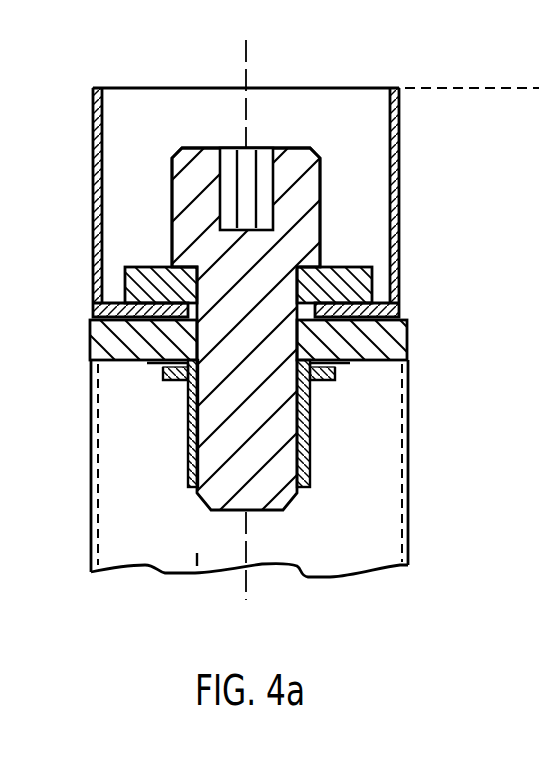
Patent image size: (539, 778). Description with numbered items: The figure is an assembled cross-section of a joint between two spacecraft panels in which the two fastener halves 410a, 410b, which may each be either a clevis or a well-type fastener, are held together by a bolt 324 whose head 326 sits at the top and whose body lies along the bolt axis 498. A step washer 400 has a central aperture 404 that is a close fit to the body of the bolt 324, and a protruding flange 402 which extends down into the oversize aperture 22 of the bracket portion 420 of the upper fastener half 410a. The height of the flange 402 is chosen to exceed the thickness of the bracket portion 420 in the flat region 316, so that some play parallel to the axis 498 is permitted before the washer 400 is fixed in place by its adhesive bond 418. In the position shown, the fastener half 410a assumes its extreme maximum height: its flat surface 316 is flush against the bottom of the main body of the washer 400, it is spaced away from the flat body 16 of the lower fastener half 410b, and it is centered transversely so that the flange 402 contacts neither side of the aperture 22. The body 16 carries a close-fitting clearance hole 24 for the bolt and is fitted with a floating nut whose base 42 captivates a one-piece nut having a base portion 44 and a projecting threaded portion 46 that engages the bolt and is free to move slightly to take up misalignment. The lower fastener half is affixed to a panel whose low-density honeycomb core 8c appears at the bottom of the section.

The axis of the bolt 498 is at (243, 55).
The head 326 is at (293, 148).
The fastener half 410a is at (400, 135).
The bolt 324 is at (172, 178).
The central aperture 404 is at (197, 298).
The flat surface 316 is at (110, 300).
The protruding flange 402 is at (298, 312).
The washer 400 is at (374, 283).
The adhesive bond 418 is at (390, 304).
The bracket portion 420 is at (188, 322).
The aperture 22 is at (108, 358).
The fastener half 410b is at (408, 338).
The flat body portion 16 is at (132, 365).
The base 42 is at (353, 367).
The clearance hole 24 is at (188, 378).
The base portion 44 is at (315, 365).
The projecting threaded portion 46 is at (310, 478).
The honeycomb core 8c is at (197, 553).